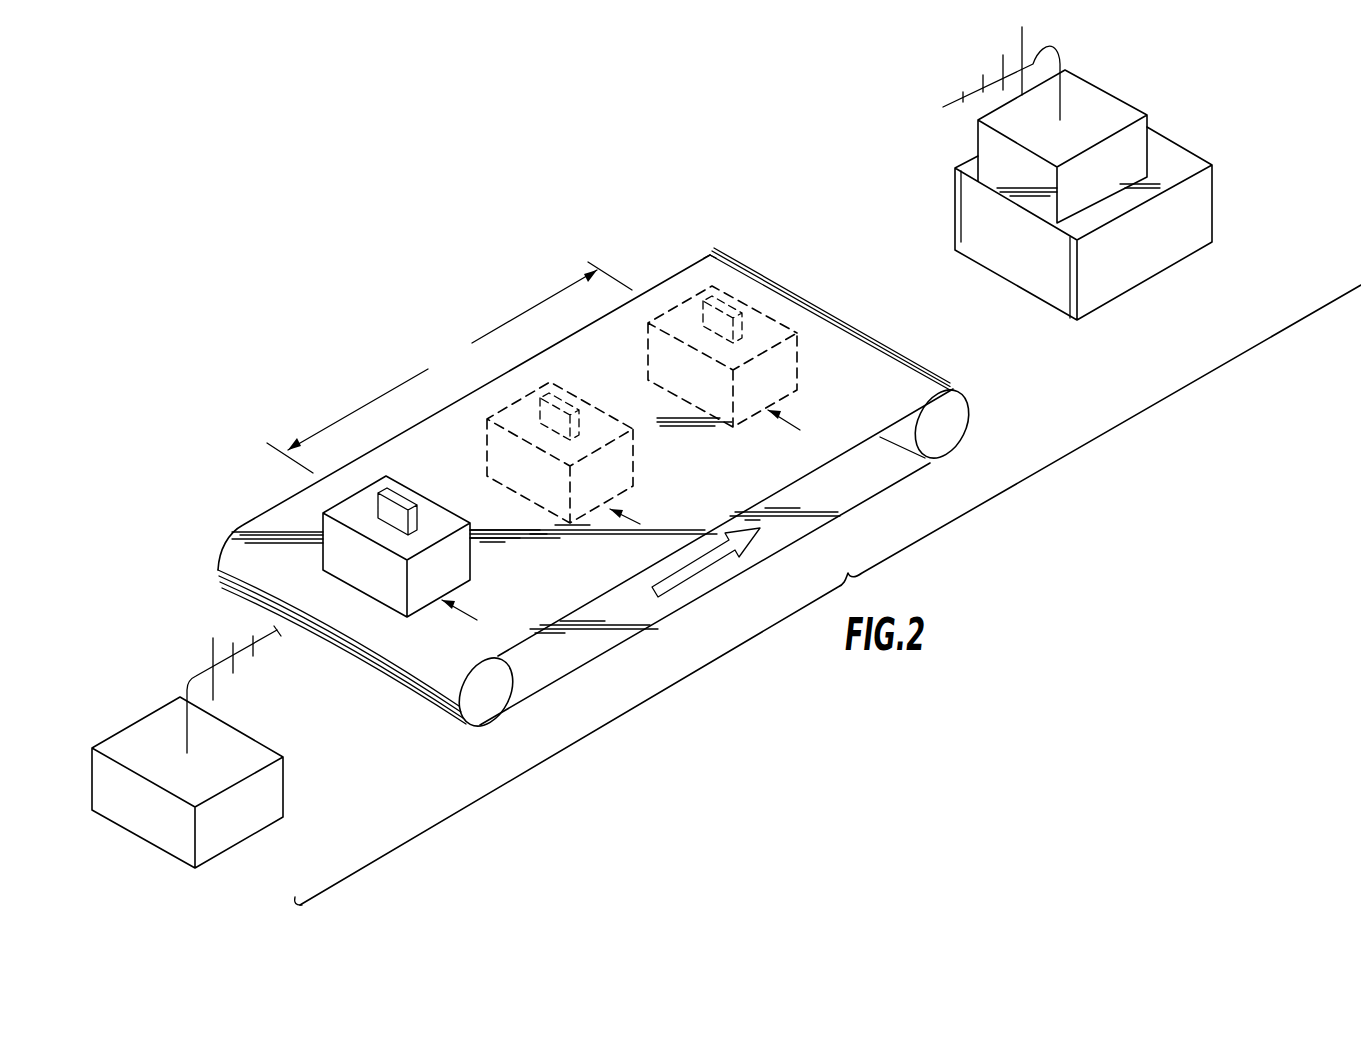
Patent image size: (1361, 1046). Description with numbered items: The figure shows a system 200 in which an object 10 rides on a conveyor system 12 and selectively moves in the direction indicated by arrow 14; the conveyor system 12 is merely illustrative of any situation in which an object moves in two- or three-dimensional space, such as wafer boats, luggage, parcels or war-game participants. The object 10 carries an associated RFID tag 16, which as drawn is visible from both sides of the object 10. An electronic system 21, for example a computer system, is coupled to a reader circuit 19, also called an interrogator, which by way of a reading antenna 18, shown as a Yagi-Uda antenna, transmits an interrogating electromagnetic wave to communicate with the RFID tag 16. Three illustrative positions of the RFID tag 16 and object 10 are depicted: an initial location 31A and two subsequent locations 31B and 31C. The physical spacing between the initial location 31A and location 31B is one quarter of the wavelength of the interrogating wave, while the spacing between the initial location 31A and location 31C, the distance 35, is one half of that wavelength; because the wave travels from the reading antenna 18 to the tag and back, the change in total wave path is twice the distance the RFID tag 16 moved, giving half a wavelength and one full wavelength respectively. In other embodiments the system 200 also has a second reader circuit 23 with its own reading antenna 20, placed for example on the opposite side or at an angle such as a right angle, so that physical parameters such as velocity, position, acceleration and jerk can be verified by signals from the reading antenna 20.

The system 200 is at (218, 216).
The object 10 is at (337, 505).
The conveyor system 12 is at (693, 277).
The arrow 14 is at (707, 571).
The RFID tag 16 is at (388, 487).
The reading antenna 18 is at (1002, 63).
The reader circuit 19 is at (1098, 100).
The reading antenna 20 is at (208, 653).
The electronic system 21 is at (1215, 220).
The second reader circuit 23 is at (250, 753).
The initial location 31A is at (463, 612).
The location 31B is at (627, 518).
The location 31C is at (785, 422).
The distance 35 is at (449, 367).